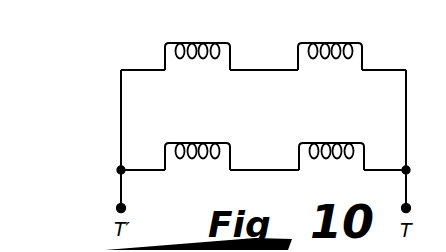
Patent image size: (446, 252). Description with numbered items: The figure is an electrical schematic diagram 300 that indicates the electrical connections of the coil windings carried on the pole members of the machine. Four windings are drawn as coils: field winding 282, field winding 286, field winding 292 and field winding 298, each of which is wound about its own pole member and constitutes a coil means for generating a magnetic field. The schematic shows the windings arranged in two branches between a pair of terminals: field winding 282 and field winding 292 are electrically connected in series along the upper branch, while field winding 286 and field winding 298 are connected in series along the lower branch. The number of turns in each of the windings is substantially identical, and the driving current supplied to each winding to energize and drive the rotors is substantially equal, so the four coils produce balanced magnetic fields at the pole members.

The schematic diagram 300 is at (104, 70).
The field winding 282 is at (164, 50).
The field winding 286 is at (193, 143).
The field winding 292 is at (328, 43).
The field winding 298 is at (335, 143).